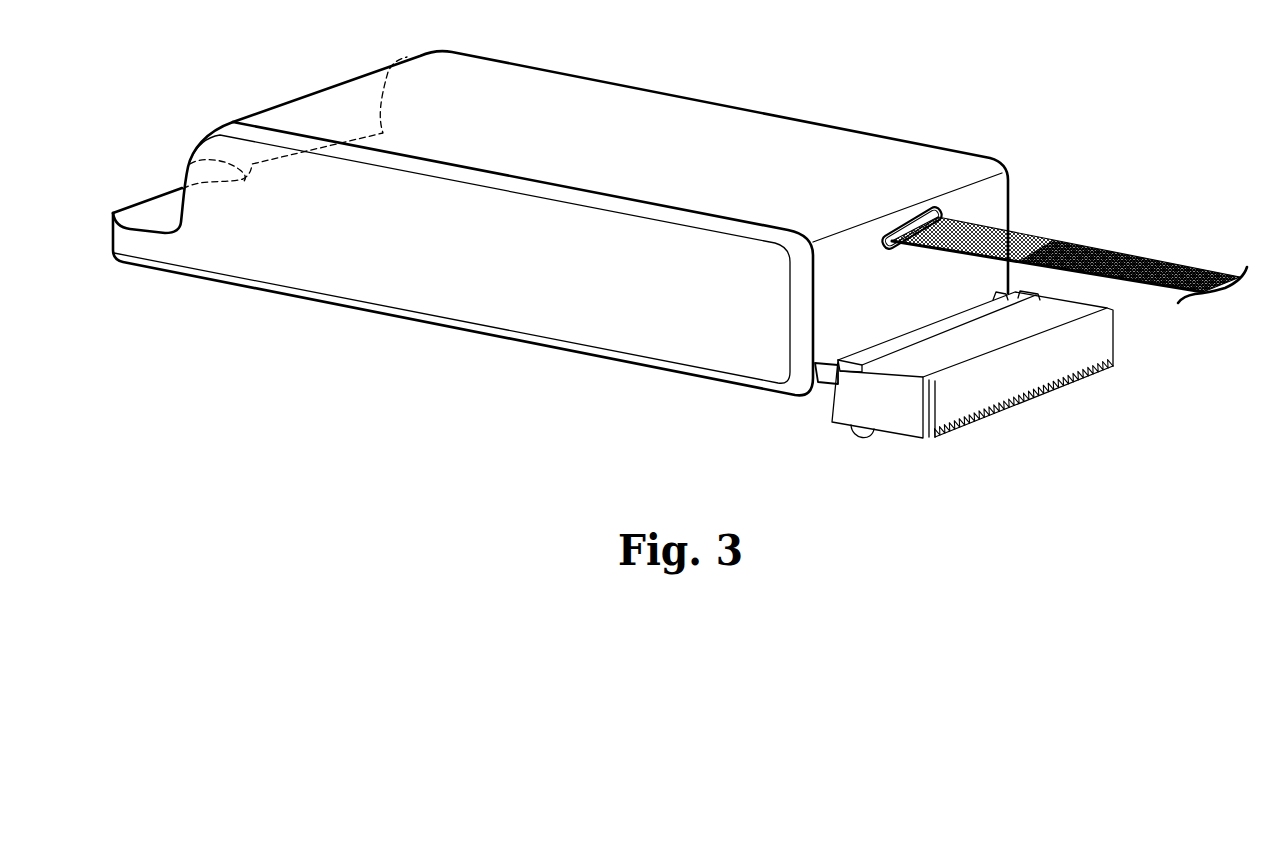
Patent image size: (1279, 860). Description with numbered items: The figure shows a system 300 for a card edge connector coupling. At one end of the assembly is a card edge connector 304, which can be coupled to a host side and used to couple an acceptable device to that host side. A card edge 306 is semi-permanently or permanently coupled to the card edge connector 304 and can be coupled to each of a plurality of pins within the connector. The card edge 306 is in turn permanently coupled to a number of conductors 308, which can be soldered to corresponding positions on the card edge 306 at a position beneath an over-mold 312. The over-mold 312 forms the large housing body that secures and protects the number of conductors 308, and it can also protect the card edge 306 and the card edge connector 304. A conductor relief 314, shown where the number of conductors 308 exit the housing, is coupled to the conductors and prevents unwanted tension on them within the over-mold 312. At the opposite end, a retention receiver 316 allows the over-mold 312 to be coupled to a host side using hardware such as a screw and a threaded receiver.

The system 300 is at (958, 88).
The card edge connector 304 is at (888, 420).
The card edge 306 is at (812, 390).
The number of conductors 308 is at (1057, 248).
The over-mold 312 is at (390, 302).
The conductor relief 314 is at (911, 217).
The retention receiver 316 is at (188, 167).